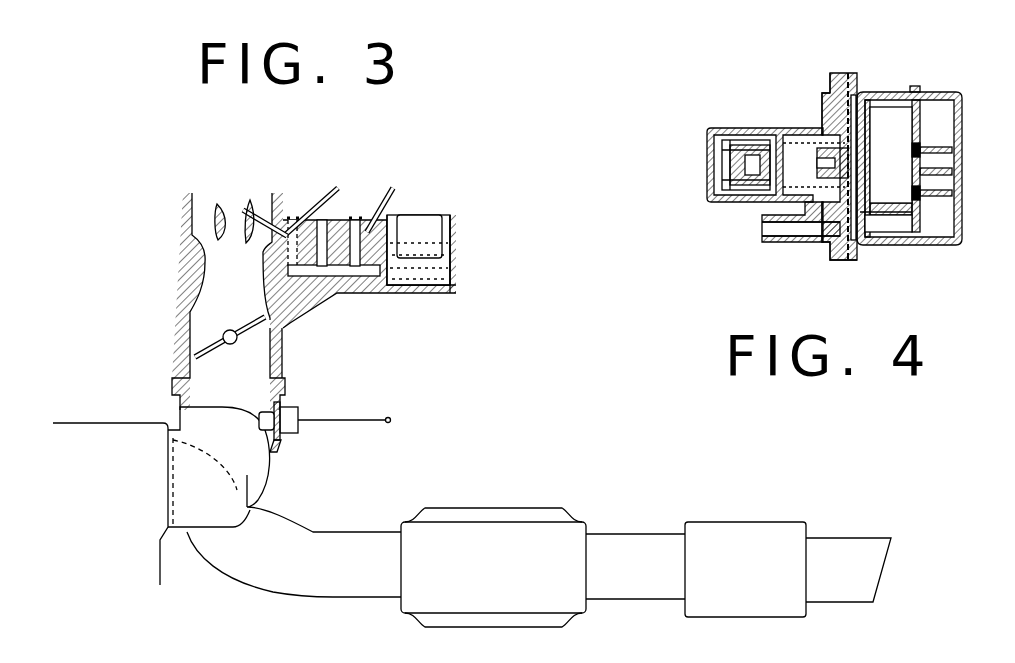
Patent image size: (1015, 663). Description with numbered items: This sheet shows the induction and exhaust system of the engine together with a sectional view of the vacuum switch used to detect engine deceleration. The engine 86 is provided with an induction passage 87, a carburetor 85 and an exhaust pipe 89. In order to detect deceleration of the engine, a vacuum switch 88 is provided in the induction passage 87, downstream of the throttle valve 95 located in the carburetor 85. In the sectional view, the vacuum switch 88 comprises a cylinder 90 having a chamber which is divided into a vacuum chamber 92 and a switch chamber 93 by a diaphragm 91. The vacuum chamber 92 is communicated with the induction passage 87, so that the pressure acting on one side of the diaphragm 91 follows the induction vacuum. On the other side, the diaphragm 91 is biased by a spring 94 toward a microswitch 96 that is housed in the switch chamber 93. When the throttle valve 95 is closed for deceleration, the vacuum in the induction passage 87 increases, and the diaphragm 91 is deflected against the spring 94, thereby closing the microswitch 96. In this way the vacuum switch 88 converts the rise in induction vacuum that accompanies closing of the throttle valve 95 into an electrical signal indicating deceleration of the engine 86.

In FIG. 3, the carburetor 85 is at (172, 260).
In FIG. 3, the engine 86 is at (114, 435).
In FIG. 3, the induction passage 87 is at (250, 460).
In FIG. 3, the vacuum switch 88 is at (296, 410).
In FIG. 4, the vacuum switch 88 is at (853, 150).
In FIG. 3, the exhaust pipe 89 is at (343, 593).
In FIG. 4, the cylinder 90 is at (822, 88).
In FIG. 4, the diaphragm 91 is at (853, 108).
In FIG. 4, the vacuum chamber 92 is at (835, 215).
In FIG. 4, the switch chamber 93 is at (892, 220).
In FIG. 4, the spring 94 is at (792, 130).
In FIG. 3, the throttle valve 95 is at (205, 344).
In FIG. 4, the microswitch 96 is at (897, 146).